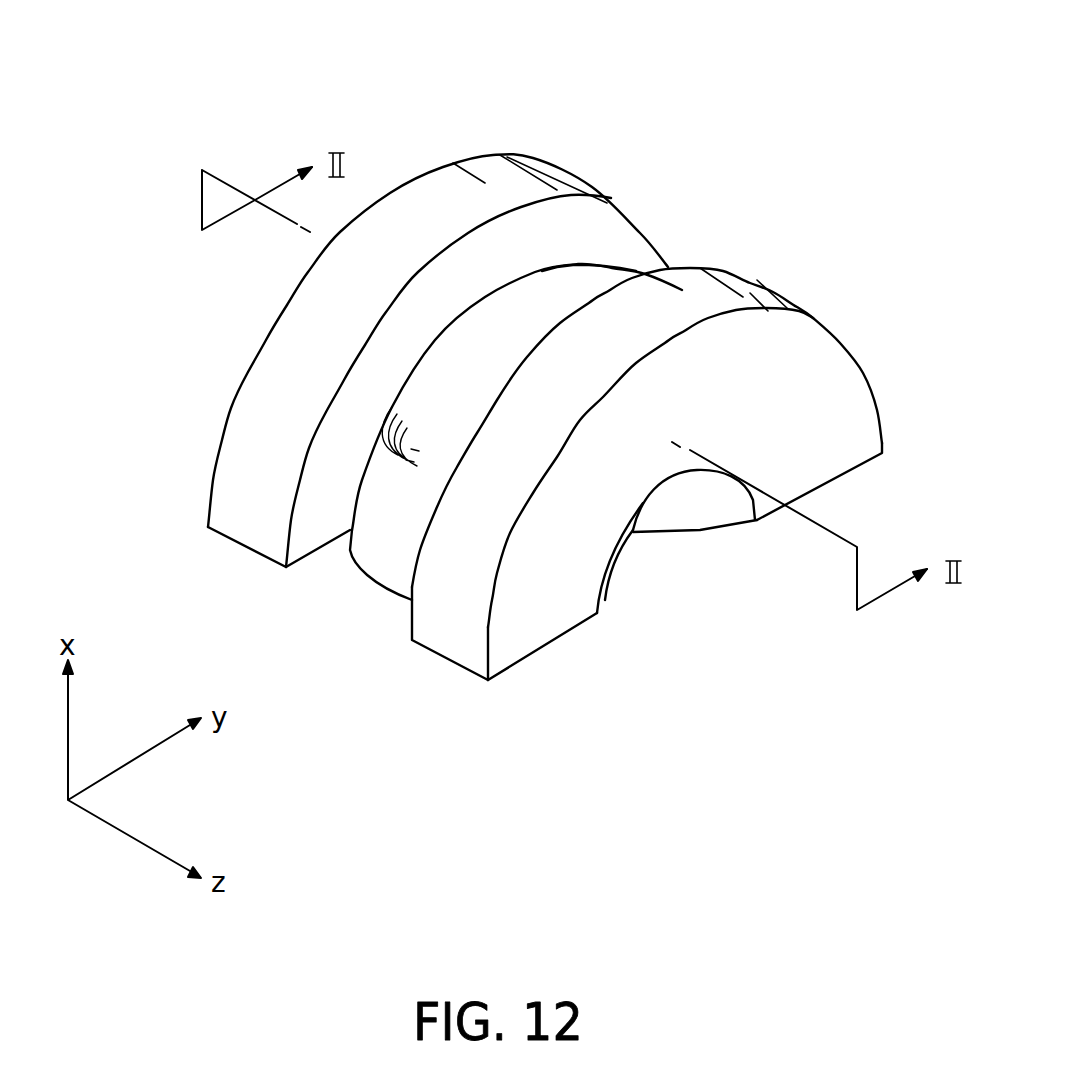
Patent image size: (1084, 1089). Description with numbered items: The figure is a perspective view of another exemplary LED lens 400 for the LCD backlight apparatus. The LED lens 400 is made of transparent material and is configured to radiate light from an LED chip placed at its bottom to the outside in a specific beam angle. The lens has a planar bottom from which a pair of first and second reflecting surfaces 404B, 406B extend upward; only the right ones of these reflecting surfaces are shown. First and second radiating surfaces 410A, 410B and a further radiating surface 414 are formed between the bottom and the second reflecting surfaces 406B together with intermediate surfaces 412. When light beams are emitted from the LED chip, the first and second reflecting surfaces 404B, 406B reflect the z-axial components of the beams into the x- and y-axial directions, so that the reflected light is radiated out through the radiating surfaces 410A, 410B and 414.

The LED lens 400 is at (800, 36).
The first radiating surface 410A is at (423, 197).
The second radiating surface 410B is at (733, 305).
The intermediate surface 412 is at (567, 230).
The radiating surface 414 is at (603, 264).
The first reflecting surface 404B is at (707, 521).
The second reflecting surface 406B is at (546, 619).